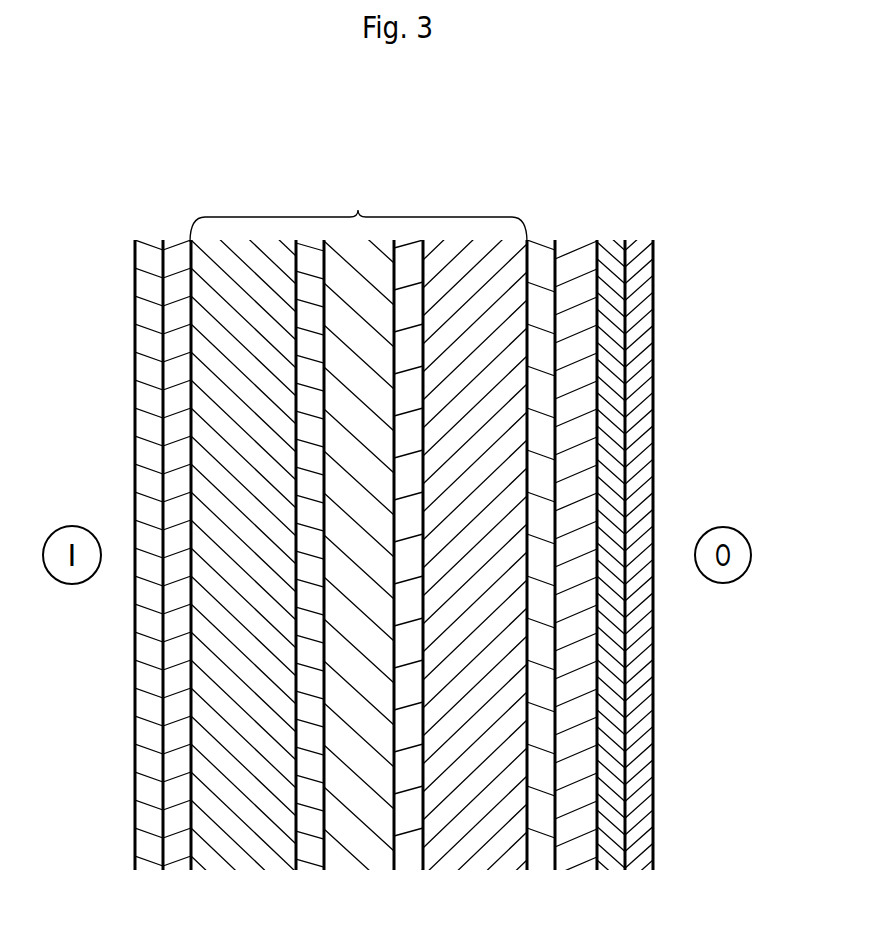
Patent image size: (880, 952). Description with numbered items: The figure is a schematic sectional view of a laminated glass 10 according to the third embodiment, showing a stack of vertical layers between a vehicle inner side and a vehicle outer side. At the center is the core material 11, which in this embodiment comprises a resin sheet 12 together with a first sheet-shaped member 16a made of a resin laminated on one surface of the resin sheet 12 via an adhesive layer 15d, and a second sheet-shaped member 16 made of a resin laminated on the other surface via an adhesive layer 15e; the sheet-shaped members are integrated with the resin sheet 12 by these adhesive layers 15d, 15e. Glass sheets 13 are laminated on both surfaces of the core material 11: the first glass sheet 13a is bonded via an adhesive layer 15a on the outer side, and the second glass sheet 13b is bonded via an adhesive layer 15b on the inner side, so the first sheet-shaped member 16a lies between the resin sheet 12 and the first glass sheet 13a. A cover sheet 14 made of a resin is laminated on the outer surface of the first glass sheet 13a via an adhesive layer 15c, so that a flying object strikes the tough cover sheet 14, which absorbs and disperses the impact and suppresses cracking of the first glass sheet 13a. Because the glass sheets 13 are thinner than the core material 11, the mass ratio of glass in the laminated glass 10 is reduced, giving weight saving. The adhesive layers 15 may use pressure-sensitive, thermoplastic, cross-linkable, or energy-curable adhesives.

The laminated glass 10 is at (527, 210).
The core material 11 is at (358, 210).
The resin sheet 12 is at (358, 862).
The glass sheets 13 is at (376, 502).
The first glass sheet 13a is at (578, 243).
The second glass sheet 13b is at (145, 246).
The cover sheet 14 is at (648, 243).
The adhesive layers 15 is at (423, 518).
The adhesive layer 15a is at (542, 242).
The adhesive layer 15b is at (180, 247).
The adhesive layer 15c is at (612, 243).
The adhesive layer 15d is at (408, 863).
The adhesive layer 15e is at (310, 865).
The sheet-shaped member 16 is at (376, 540).
The first sheet-shaped member 16a is at (240, 860).